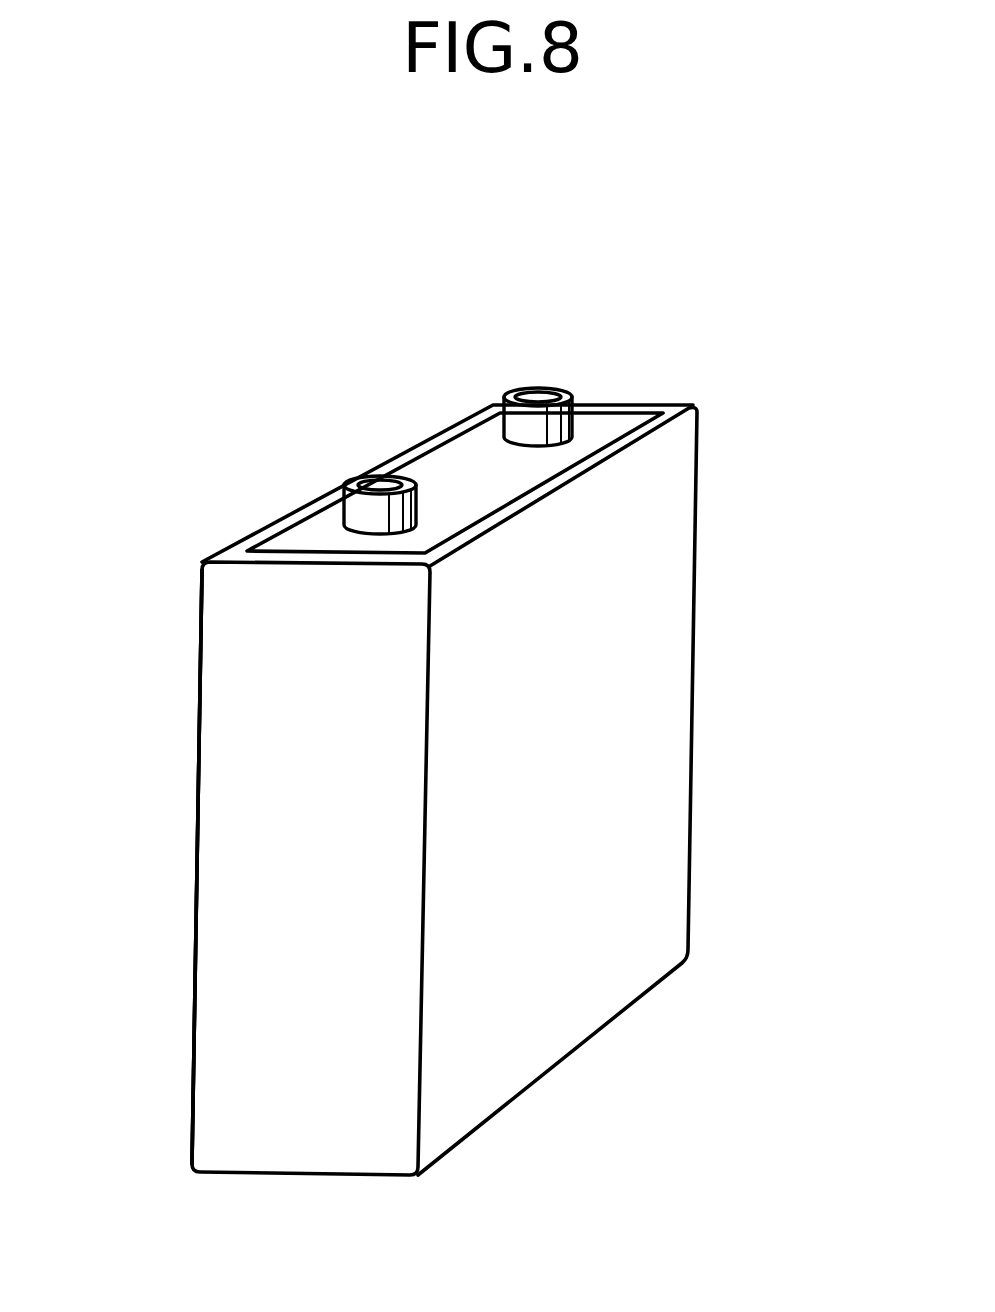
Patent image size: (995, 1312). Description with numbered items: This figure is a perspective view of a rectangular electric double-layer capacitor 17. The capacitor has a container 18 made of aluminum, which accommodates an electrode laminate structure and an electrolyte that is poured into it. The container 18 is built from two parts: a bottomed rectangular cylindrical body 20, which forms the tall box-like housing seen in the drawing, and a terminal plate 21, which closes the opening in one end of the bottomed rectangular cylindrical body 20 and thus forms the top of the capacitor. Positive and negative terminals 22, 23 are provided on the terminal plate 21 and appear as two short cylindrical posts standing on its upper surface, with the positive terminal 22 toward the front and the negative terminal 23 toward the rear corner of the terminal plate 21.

The rectangular electric double-layer capacitor 17 is at (735, 578).
The container 18 is at (235, 682).
The bottomed rectangular cylindrical body 20 is at (235, 890).
The terminal plate 21 is at (488, 482).
The positive terminal 22 is at (353, 477).
The negative terminal 23 is at (528, 385).